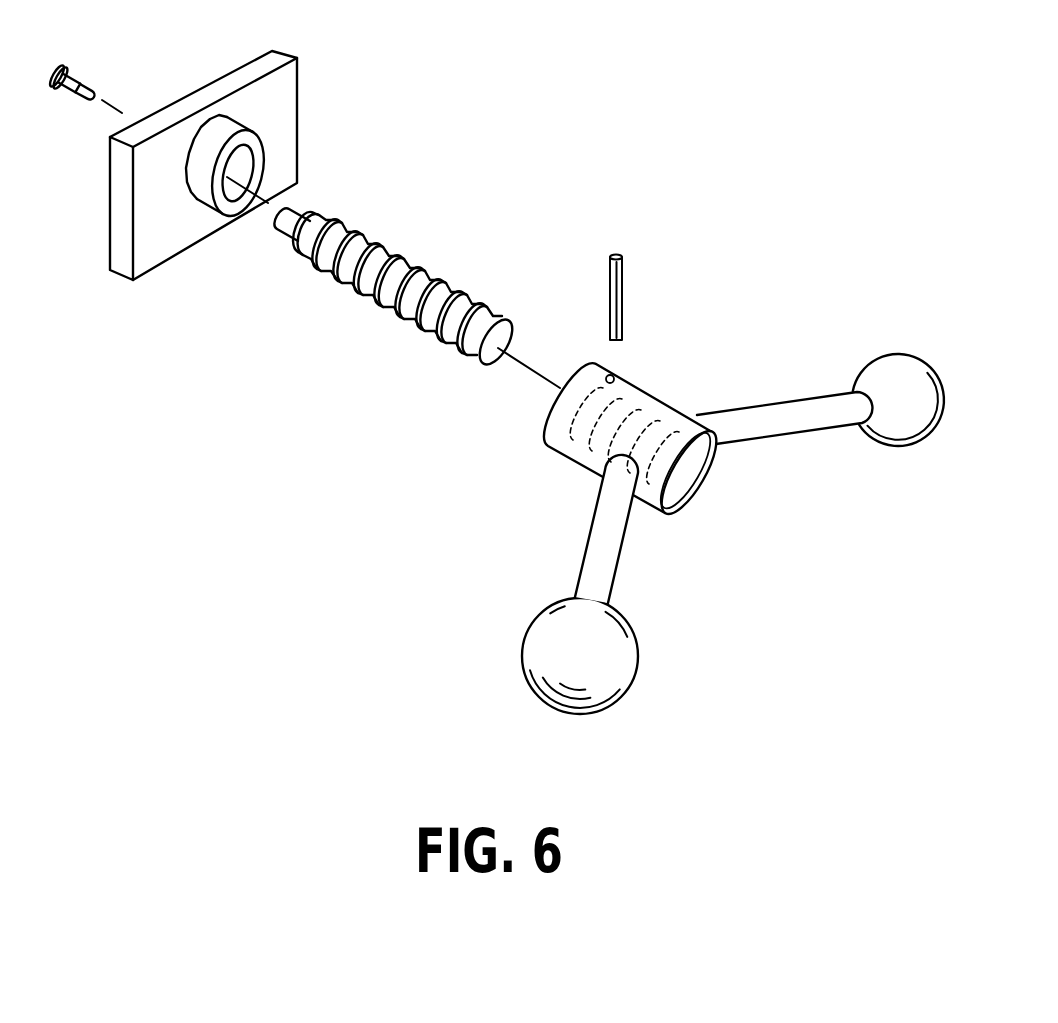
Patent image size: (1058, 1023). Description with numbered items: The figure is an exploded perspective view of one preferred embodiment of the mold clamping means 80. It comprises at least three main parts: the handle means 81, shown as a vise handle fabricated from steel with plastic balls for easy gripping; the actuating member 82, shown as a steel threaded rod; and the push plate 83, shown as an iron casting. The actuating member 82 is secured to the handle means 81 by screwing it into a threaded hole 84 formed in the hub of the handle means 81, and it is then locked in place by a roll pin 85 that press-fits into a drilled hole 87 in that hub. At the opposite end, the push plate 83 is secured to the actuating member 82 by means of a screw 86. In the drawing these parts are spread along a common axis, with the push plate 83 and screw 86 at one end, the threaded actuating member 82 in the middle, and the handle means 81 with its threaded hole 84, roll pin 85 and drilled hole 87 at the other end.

The mold clamping means 80 is at (585, 131).
The handle means 81 is at (698, 476).
The actuating member 82 is at (355, 290).
The push plate 83 is at (270, 120).
The threaded hole 84 is at (607, 410).
The roll pin 85 is at (603, 277).
The screw 86 is at (80, 82).
The drilled hole 87 is at (614, 377).